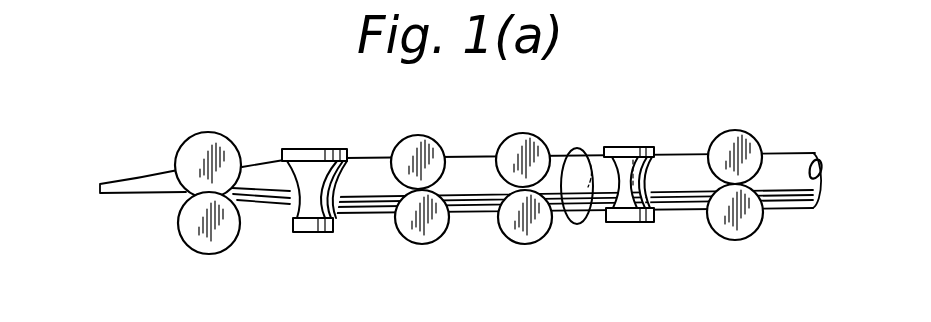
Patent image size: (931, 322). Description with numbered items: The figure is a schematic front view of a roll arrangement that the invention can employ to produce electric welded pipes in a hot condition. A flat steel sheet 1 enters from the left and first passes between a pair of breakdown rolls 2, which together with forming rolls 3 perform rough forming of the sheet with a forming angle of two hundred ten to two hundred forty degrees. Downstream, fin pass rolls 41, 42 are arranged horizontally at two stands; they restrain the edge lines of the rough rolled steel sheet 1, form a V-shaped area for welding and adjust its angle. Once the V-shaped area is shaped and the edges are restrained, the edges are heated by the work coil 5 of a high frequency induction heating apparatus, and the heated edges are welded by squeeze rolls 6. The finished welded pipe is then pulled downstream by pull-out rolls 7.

The steel sheet 1 is at (122, 187).
The breakdown rolls 2 is at (222, 141).
The forming rolls 3 is at (308, 152).
The fin pass roll 41 is at (422, 137).
The fin pass roll 42 is at (527, 135).
The work coil 5 is at (580, 147).
The squeeze rolls 6 is at (633, 147).
The pull-out rolls 7 is at (745, 137).